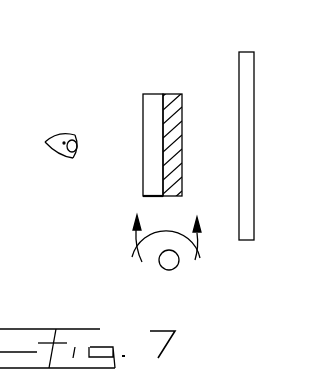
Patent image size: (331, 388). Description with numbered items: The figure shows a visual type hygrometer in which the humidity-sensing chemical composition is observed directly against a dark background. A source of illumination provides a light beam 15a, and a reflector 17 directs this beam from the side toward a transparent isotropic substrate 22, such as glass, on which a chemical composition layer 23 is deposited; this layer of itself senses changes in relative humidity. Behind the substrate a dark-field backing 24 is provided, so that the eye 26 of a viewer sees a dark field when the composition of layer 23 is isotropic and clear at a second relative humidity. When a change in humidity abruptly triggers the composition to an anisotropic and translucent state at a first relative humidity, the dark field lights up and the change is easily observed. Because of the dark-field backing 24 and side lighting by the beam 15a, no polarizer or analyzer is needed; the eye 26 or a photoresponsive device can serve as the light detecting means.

The transparent isotropic substrate 22 is at (175, 94).
The chemical composition layer 23 is at (153, 94).
The dark-field backing 24 is at (248, 52).
The eye 26 is at (47, 140).
The reflector 17 is at (201, 262).
The light beam 15a is at (169, 270).